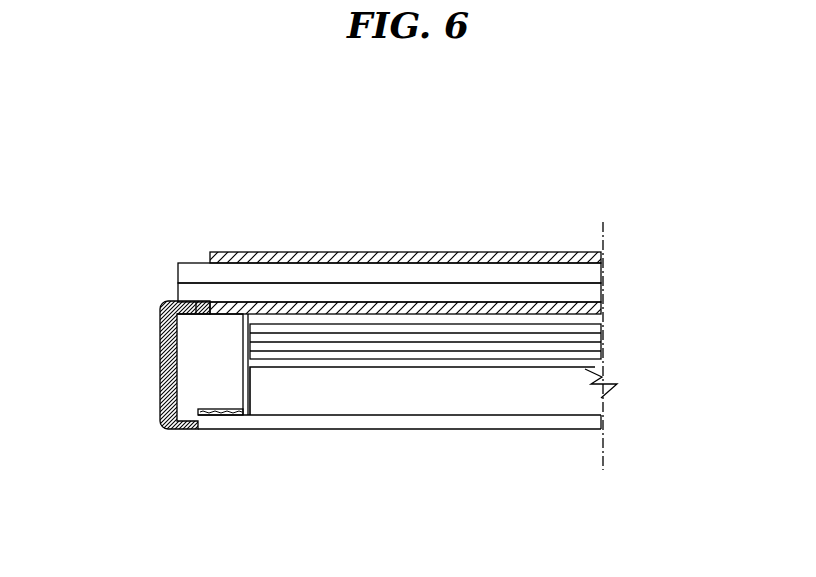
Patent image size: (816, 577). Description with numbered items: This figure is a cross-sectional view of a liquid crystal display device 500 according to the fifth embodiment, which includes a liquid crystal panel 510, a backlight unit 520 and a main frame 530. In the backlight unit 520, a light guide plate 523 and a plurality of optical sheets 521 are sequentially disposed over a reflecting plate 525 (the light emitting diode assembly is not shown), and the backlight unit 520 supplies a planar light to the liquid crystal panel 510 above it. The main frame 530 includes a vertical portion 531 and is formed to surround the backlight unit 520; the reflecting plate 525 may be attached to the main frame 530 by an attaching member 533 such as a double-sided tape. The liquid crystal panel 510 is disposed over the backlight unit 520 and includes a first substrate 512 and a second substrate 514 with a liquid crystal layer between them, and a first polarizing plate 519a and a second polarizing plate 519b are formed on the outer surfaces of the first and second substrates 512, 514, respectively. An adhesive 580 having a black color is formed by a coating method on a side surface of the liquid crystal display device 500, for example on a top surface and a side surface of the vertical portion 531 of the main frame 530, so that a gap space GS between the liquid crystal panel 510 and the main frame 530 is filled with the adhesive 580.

The liquid crystal display device 500 is at (315, 129).
The liquid crystal panel 510 is at (410, 184).
The first substrate 512 is at (440, 295).
The second substrate 514 is at (392, 277).
The first polarizing plate 519a is at (552, 303).
The second polarizing plate 519b is at (502, 262).
The backlight unit 520 is at (702, 345).
The optical sheets 521 is at (597, 334).
The light guide plate 523 is at (593, 400).
The reflecting plate 525 is at (588, 425).
The main frame 530 is at (175, 330).
The vertical portion 531 is at (203, 367).
The attaching member 533 is at (221, 417).
The adhesive 580 is at (170, 378).
The gap space GS is at (192, 302).